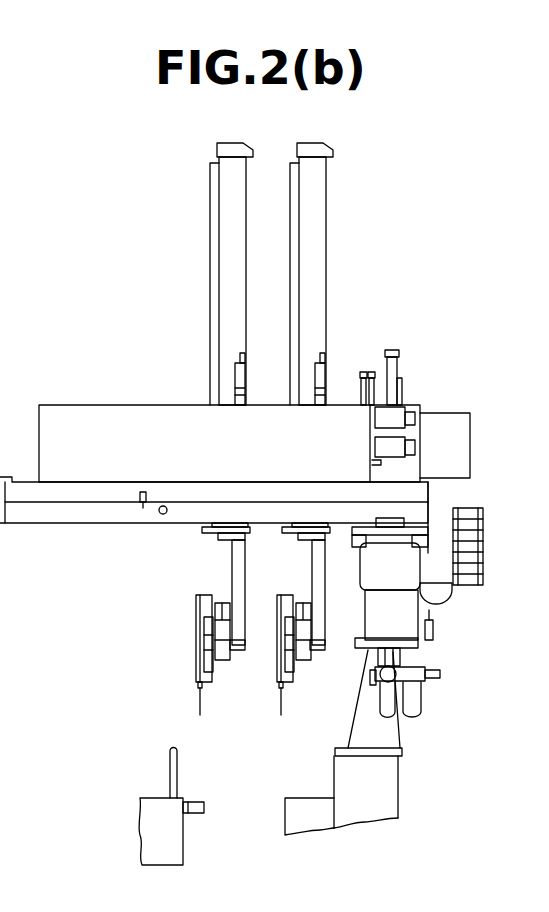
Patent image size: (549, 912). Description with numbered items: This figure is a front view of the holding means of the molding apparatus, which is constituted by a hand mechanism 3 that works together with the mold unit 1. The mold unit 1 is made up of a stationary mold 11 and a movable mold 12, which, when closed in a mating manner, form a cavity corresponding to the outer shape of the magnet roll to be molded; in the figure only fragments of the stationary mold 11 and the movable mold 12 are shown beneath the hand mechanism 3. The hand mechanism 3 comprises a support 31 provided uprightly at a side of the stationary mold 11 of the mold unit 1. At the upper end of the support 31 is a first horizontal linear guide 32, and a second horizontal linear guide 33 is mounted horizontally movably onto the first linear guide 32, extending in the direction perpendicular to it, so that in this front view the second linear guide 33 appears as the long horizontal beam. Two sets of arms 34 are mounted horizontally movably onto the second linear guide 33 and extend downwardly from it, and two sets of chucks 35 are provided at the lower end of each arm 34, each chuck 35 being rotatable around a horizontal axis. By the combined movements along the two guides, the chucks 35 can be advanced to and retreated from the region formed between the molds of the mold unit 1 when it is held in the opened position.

The mold unit 1 is at (169, 806).
The hand mechanism 3 is at (424, 258).
The stationary mold 11 is at (298, 820).
The movable mold 12 is at (155, 822).
The support 31 is at (385, 733).
The first horizontal linear guide 32 is at (405, 568).
The second horizontal linear guide 33 is at (62, 512).
The arms 34 is at (318, 578).
The chucks 35 is at (195, 655).